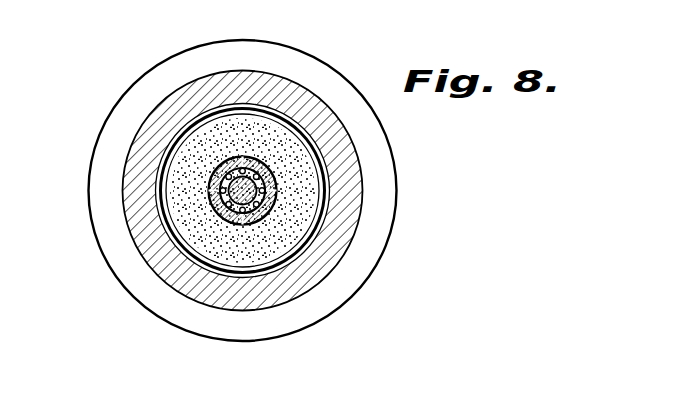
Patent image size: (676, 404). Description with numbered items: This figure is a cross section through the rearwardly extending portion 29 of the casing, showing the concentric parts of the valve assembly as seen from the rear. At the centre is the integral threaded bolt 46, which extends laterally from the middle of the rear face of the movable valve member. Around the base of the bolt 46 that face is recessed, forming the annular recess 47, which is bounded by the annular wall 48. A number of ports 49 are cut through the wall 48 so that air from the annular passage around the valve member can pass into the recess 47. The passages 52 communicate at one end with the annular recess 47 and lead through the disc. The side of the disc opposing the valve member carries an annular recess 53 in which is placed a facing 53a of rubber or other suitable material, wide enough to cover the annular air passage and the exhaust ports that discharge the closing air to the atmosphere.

The rearwardly extending portion 29 is at (183, 295).
The threaded bolt 46 is at (222, 181).
The annular recess 47 is at (222, 163).
The annular wall 48 is at (277, 202).
The ports 49 is at (272, 225).
The passages 52 is at (260, 177).
The annular recess 53 is at (222, 270).
The facing 53a is at (272, 252).